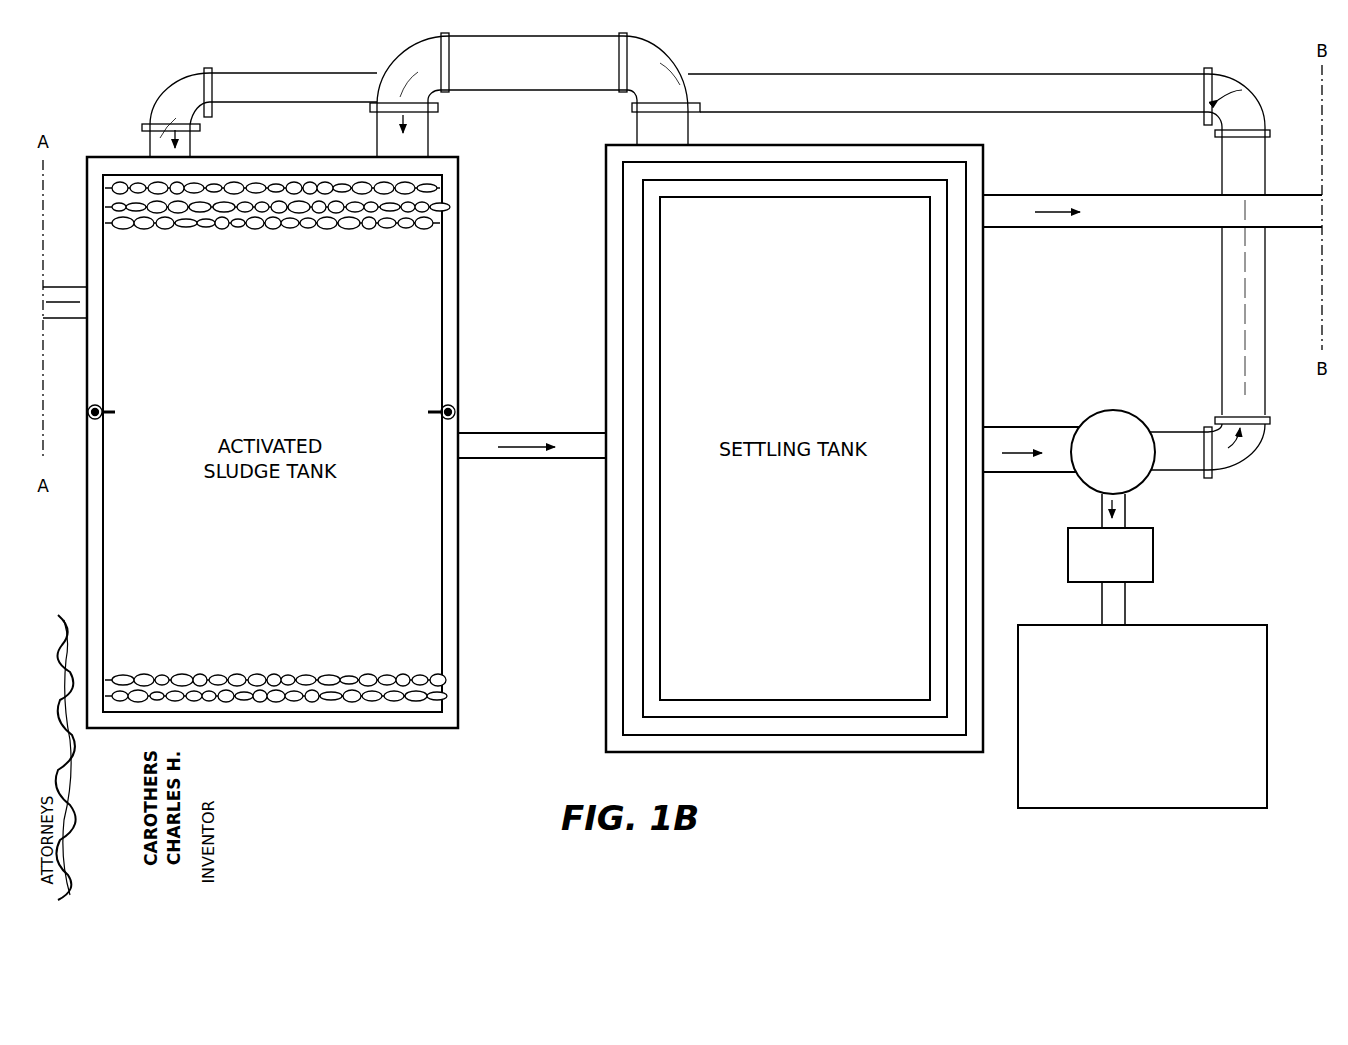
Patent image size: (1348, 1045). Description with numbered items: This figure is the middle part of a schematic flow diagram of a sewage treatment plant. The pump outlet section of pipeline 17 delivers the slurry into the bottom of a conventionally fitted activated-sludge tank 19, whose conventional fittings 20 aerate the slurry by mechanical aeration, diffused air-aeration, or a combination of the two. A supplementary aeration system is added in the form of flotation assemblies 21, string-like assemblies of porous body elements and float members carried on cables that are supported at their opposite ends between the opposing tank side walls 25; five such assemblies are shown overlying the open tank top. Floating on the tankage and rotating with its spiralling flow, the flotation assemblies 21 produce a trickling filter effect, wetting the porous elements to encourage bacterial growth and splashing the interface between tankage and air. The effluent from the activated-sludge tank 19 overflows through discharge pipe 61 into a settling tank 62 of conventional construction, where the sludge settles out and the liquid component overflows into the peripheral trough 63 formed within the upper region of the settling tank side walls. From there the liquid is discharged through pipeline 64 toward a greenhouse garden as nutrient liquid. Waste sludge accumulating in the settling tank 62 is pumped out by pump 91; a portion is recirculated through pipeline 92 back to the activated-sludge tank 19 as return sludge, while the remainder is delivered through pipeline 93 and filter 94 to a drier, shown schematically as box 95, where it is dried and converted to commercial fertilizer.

The pipeline 17 is at (70, 296).
The activated-sludge tank 19 is at (302, 163).
The conventional fittings 20 is at (90, 406).
The flotation assemblies 21 is at (428, 212).
The tank side walls 25 is at (87, 581).
The discharge pipe 61 is at (583, 432).
The settling tank 62 is at (940, 752).
The peripheral trough 63 is at (628, 680).
The pipeline 64 is at (1112, 222).
The pump 91 is at (1090, 422).
The pipeline 92 is at (256, 76).
The pipeline 93 is at (1126, 512).
The filter 94 is at (1155, 554).
The drier 95 is at (1018, 768).